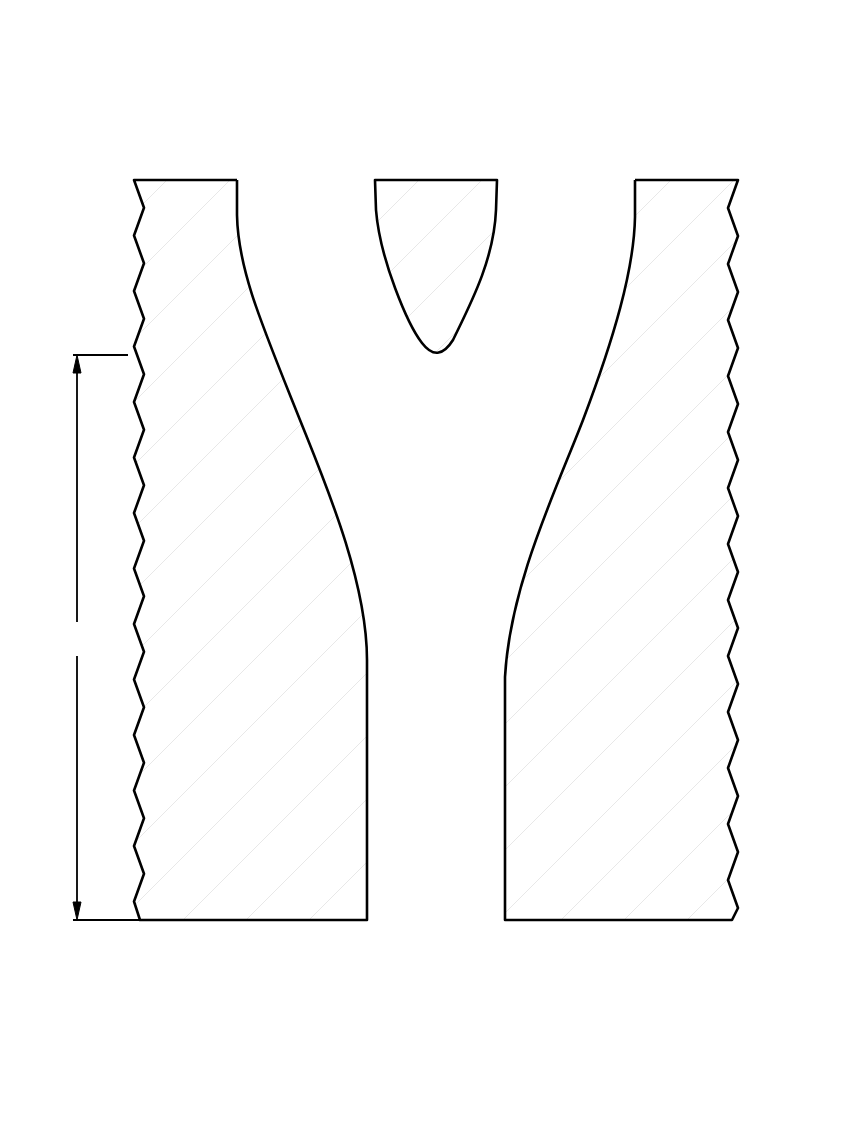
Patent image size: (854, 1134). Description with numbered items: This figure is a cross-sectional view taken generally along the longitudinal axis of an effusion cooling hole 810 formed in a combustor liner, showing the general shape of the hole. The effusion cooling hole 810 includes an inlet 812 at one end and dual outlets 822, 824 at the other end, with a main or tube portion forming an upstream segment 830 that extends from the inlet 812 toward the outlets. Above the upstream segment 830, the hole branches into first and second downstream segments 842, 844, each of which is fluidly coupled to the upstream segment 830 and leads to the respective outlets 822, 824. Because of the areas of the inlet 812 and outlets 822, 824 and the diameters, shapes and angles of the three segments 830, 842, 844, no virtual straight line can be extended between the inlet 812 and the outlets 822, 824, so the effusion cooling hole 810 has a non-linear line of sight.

The effusion cooling hole 810 is at (227, 112).
The inlet 812 is at (433, 908).
The first outlet 822 is at (310, 186).
The second outlet 824 is at (565, 186).
The upstream segment 830 is at (96, 637).
The first downstream segment 842 is at (343, 298).
The second downstream segment 844 is at (580, 298).